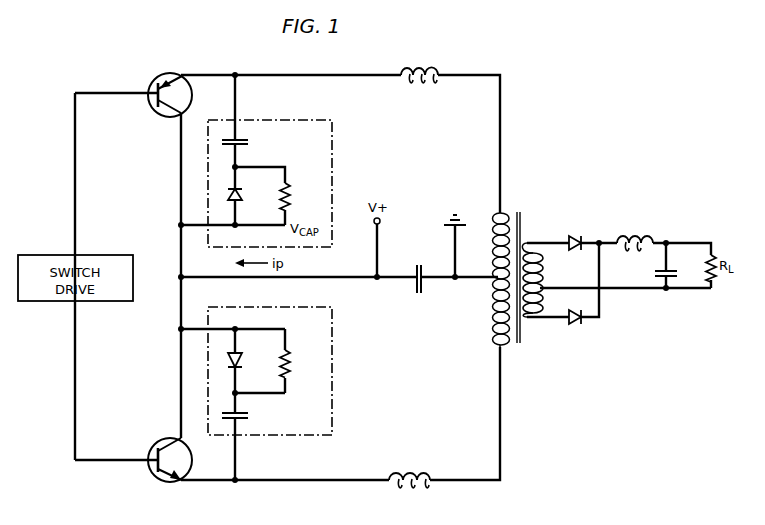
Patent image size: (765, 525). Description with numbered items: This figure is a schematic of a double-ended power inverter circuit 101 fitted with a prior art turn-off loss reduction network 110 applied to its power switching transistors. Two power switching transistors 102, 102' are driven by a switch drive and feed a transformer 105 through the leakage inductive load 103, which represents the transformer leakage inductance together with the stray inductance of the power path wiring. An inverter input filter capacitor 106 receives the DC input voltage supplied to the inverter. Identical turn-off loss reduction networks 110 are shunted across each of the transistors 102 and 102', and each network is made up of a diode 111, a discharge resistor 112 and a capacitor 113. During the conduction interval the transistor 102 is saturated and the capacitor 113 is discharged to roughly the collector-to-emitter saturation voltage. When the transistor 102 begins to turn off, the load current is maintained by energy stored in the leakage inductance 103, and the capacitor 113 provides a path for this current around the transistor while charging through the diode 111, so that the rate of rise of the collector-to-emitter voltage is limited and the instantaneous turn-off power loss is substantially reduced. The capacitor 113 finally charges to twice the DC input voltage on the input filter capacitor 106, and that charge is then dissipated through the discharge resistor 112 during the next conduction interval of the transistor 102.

The double-ended power inverter circuit 101 is at (303, 506).
The power switching transistor 102 is at (166, 86).
The power switching transistor 102' is at (165, 450).
The leakage inductive load 103 is at (419, 65).
The transformer 105 is at (518, 269).
The inverter input filter capacitor 106 is at (419, 270).
The turn-off loss reduction network 110 is at (322, 149).
The diode 111 is at (249, 196).
The discharge resistor 112 is at (299, 197).
The capacitor 113 is at (248, 144).